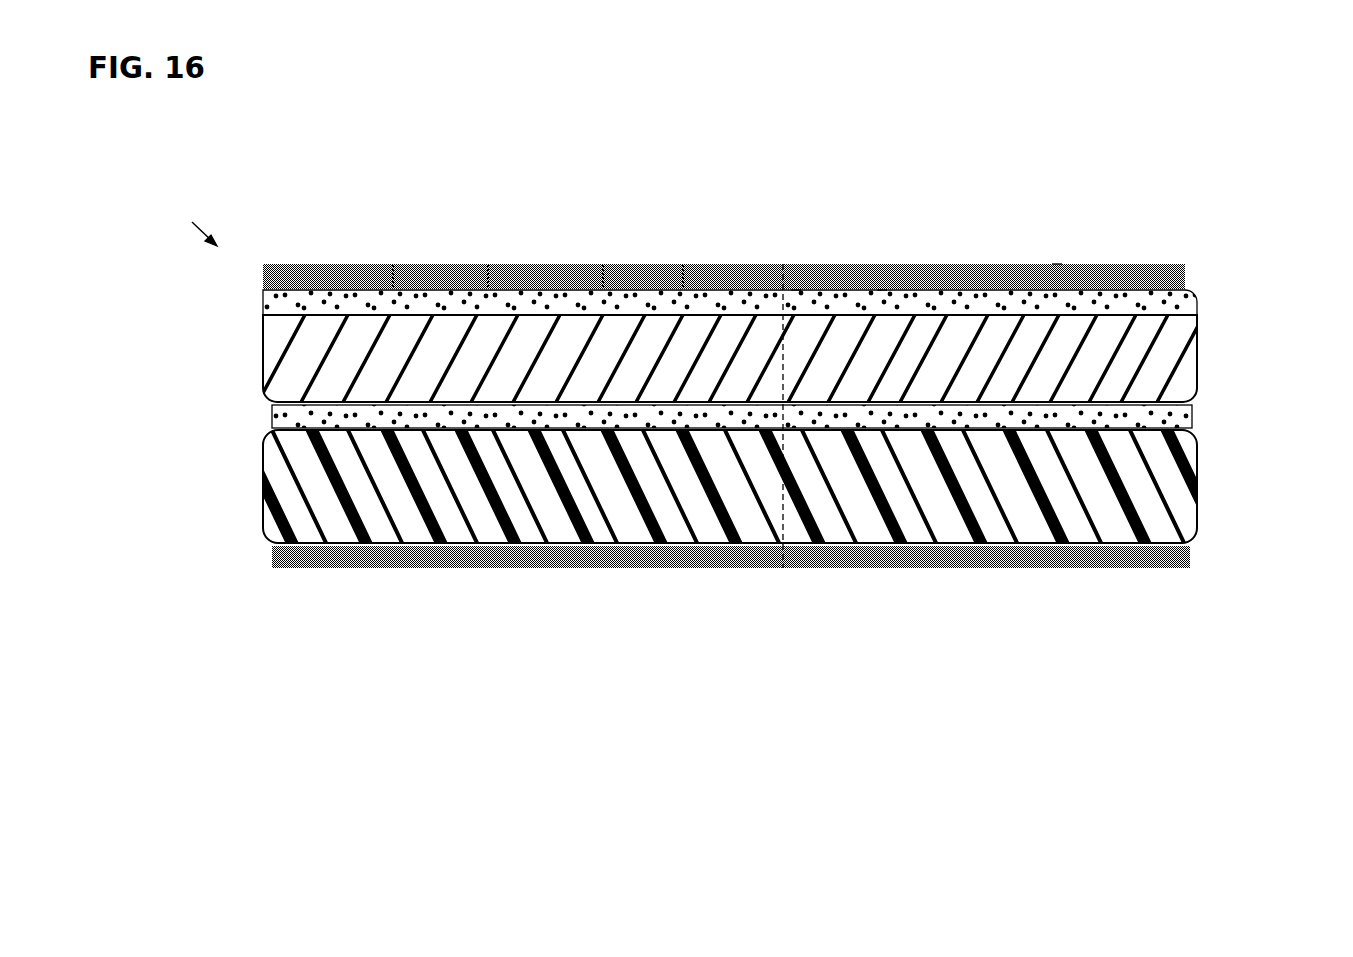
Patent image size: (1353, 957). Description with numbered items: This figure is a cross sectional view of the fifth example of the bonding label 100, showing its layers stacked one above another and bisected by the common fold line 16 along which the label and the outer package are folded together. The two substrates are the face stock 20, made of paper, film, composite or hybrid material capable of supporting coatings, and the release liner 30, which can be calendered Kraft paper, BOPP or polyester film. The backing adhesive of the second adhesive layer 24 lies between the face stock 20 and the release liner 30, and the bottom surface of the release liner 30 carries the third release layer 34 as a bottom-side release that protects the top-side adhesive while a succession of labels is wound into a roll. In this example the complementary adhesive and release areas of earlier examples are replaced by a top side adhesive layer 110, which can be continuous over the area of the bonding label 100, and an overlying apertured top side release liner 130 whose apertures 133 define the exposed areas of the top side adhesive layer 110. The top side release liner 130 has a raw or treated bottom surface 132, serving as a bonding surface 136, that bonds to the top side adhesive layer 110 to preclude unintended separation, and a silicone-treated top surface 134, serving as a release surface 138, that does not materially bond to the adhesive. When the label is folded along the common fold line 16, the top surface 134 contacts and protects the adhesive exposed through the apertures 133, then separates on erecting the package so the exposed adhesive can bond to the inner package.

The bonding label 100 is at (183, 222).
The top side adhesive layer 110 is at (265, 314).
The top side release liner 130 is at (1187, 283).
The bottom surface 132 is at (263, 291).
The apertures 133 is at (435, 264).
The top surface 134 is at (1057, 264).
The bonding surface 136 is at (882, 290).
The release surface 138 is at (796, 290).
The common fold line 16 is at (773, 264).
The face stock 20 is at (1197, 352).
The second adhesive layer 24 is at (1192, 420).
The release liner 30 is at (1187, 498).
The third release layer 34 is at (1180, 556).